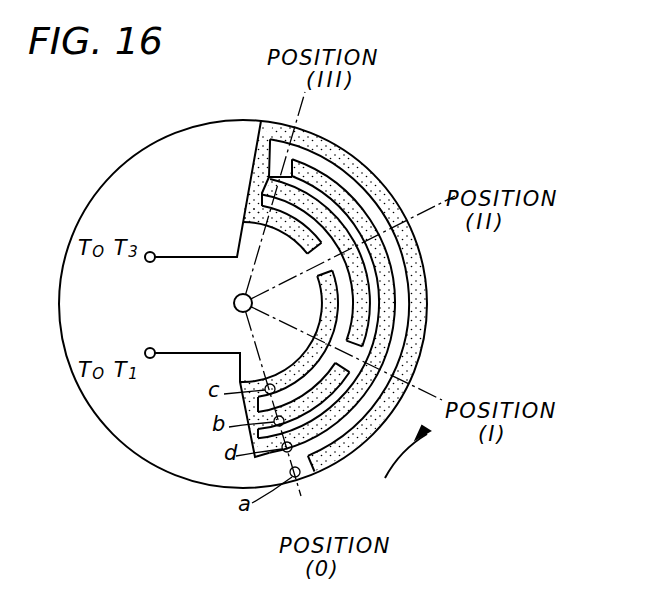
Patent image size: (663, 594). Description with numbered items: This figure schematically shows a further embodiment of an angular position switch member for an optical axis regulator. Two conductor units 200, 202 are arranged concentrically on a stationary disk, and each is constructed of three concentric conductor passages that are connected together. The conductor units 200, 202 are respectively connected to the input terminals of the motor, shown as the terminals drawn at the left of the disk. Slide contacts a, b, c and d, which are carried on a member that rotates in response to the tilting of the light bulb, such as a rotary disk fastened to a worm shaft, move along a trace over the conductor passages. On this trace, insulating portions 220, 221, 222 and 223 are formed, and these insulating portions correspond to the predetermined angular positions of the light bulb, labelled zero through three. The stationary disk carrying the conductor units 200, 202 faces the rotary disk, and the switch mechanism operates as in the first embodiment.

The conductor unit 200 is at (328, 178).
The conductor unit 202 is at (377, 186).
The insulating portion 220 is at (313, 471).
The insulating portion 221 is at (352, 356).
The insulating portion 222 is at (324, 272).
The insulating portion 223 is at (280, 163).